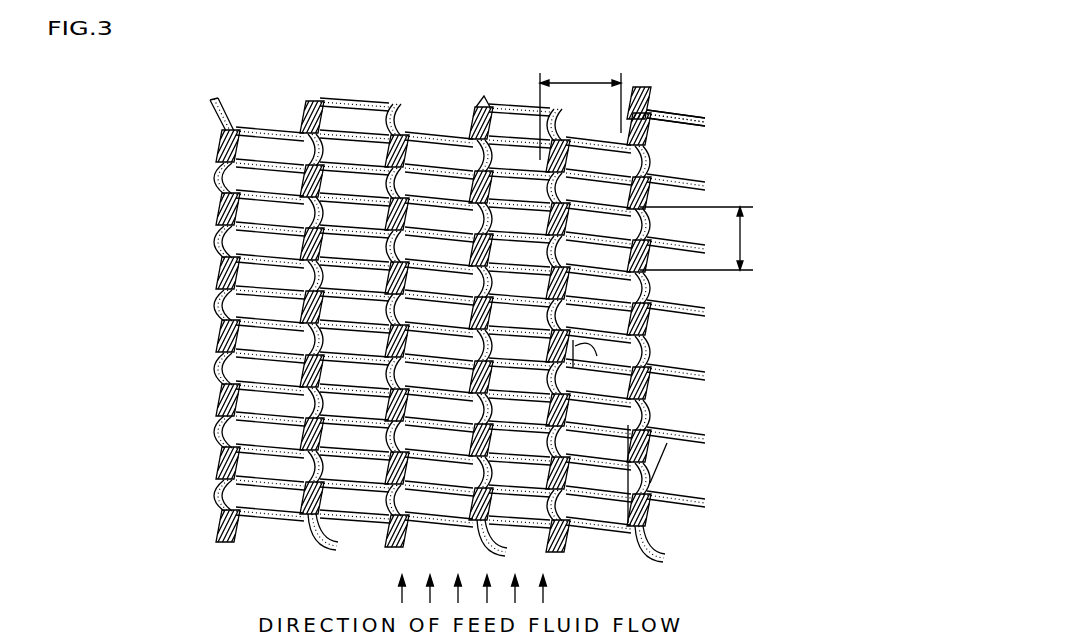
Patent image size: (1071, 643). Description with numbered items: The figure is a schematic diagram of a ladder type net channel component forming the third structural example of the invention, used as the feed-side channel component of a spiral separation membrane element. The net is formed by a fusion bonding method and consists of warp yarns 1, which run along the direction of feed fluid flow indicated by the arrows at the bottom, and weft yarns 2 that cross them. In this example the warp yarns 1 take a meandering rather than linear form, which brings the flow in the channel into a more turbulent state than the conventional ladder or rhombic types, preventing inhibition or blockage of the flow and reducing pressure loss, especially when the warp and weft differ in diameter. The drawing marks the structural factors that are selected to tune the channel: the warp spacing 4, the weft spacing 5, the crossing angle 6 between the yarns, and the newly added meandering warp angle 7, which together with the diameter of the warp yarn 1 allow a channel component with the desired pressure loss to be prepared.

The warp yarn 1 is at (650, 138).
The weft yarn 2 is at (697, 113).
The warp spacing 4 is at (580, 107).
The weft spacing 5 is at (704, 238).
The crossing angle 6 is at (592, 357).
The meandering warp angle 7 is at (663, 466).